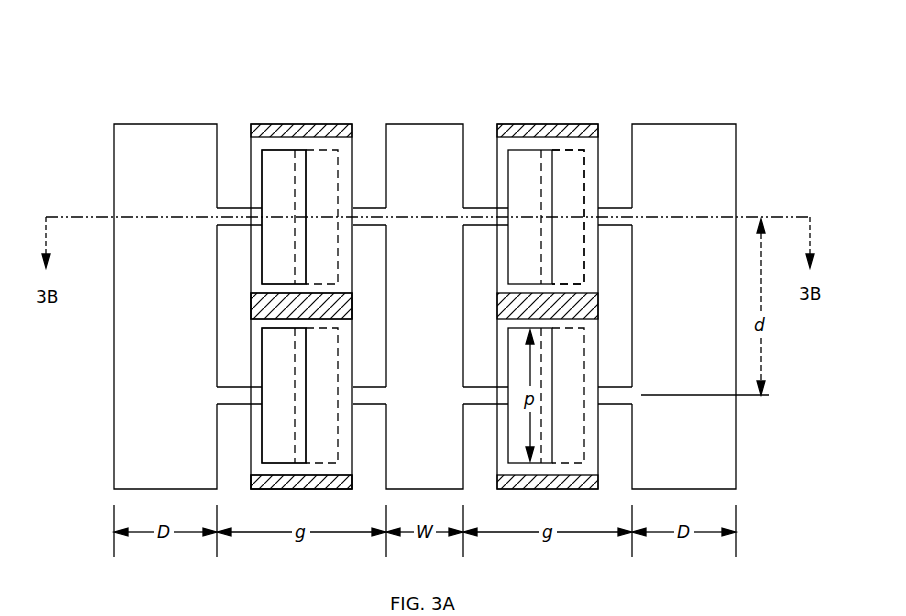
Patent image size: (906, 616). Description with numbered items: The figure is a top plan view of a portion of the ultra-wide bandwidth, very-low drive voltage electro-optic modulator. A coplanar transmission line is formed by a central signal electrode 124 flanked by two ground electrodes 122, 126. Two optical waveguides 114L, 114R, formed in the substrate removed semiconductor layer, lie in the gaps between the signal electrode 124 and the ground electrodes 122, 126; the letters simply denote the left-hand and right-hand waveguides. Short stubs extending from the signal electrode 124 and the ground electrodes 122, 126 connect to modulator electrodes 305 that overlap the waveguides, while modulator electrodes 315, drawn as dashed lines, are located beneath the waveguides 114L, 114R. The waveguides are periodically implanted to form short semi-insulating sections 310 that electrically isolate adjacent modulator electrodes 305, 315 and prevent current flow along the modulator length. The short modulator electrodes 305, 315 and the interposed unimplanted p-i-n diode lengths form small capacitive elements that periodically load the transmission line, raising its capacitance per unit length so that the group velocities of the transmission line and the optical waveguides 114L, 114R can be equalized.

The ground electrode 122 is at (166, 124).
The signal electrode 124 is at (438, 124).
The ground electrode 126 is at (693, 124).
The left-hand optical waveguide 114L is at (301, 75).
The right-hand optical waveguide 114R is at (548, 75).
The modulator electrode 305 is at (263, 433).
The semi-insulating section 310 is at (263, 477).
The modulator electrode 315 is at (585, 175).